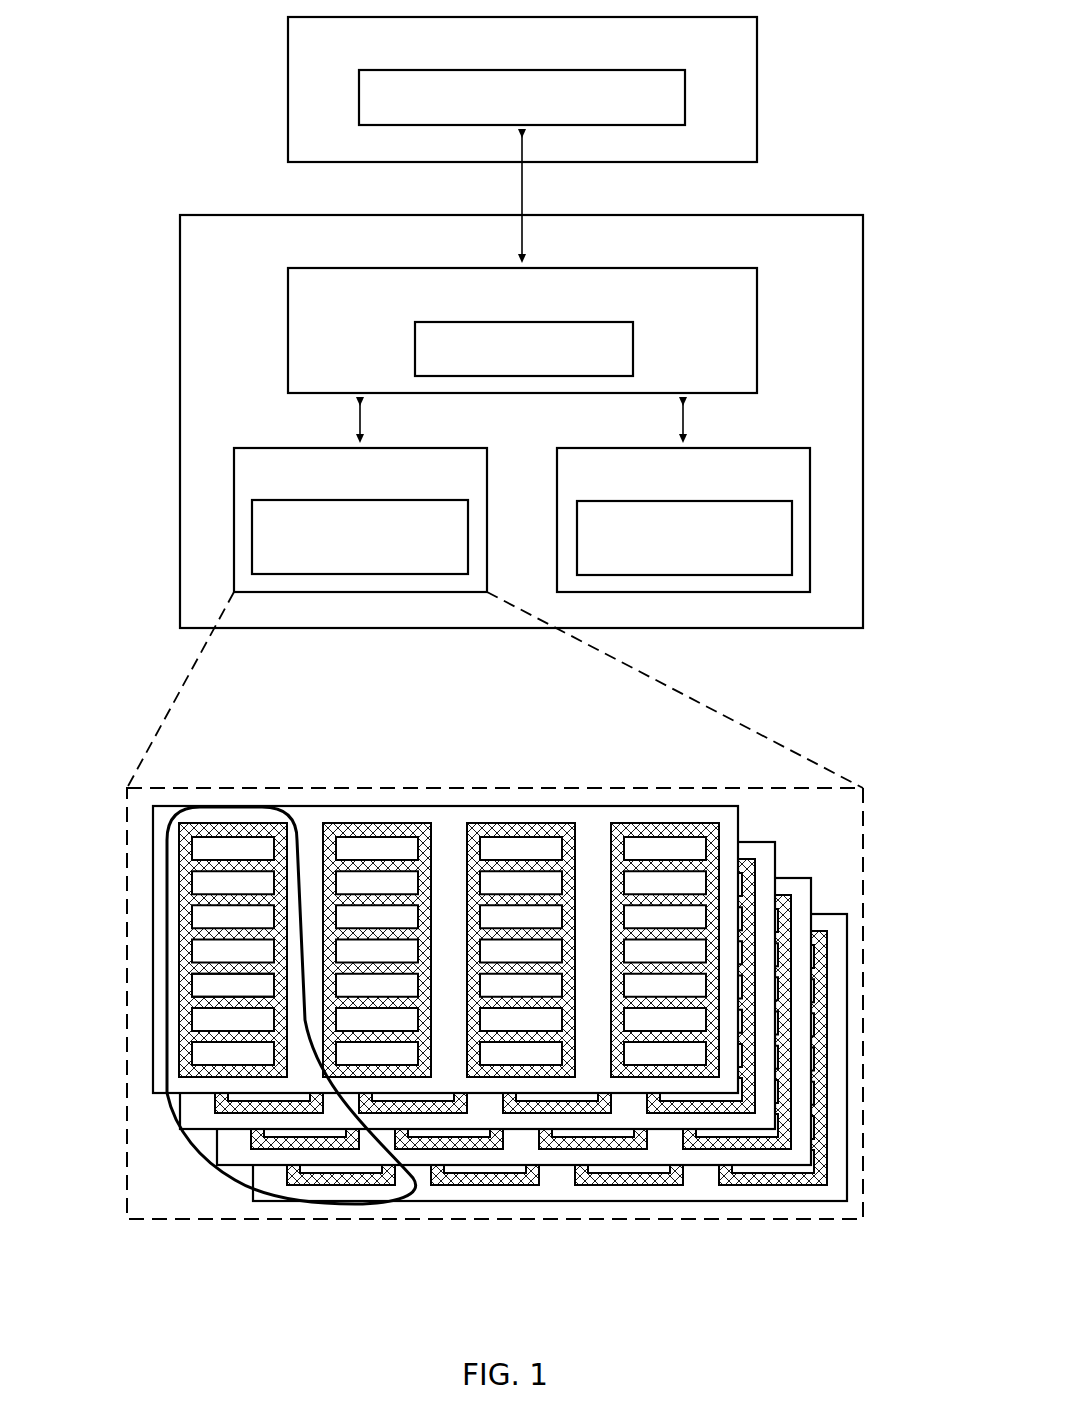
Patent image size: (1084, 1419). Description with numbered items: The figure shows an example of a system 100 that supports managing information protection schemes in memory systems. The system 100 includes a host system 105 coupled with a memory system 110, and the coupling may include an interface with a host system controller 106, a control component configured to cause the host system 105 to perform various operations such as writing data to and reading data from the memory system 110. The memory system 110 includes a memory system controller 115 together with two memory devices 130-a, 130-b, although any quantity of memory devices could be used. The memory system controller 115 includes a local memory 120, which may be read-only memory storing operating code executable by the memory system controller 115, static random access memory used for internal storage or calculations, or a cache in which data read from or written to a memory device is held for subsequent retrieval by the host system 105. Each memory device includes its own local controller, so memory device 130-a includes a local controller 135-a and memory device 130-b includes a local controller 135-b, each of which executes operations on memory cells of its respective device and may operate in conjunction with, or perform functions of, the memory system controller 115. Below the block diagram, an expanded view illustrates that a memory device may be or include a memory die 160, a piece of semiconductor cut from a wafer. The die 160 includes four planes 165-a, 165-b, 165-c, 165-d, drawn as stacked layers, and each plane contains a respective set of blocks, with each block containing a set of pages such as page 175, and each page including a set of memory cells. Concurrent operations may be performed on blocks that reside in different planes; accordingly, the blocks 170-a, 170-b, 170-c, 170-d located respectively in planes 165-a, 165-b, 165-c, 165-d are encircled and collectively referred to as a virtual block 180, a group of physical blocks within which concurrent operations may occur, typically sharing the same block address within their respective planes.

The system 100 is at (500, 693).
The host system 105 is at (460, 50).
The host system controller 106 is at (655, 108).
The memory system 110 is at (390, 248).
The memory system controller 115 is at (675, 301).
The local memory 120 is at (617, 360).
The memory device 130-a is at (468, 481).
The memory device 130-b is at (792, 481).
The local controller 135-a is at (387, 563).
The local controller 135-b is at (712, 561).
The memory die 160 is at (125, 825).
The plane 165-a is at (504, 936).
The plane 165-b is at (504, 987).
The plane 165-c is at (504, 1023).
The plane 165-d is at (539, 1077).
The block 170-a is at (178, 905).
The block 170-b is at (217, 1102).
The block 170-c is at (252, 1138).
The block 170-d is at (287, 1174).
The page 175 is at (182, 985).
The virtual block 180 is at (300, 832).